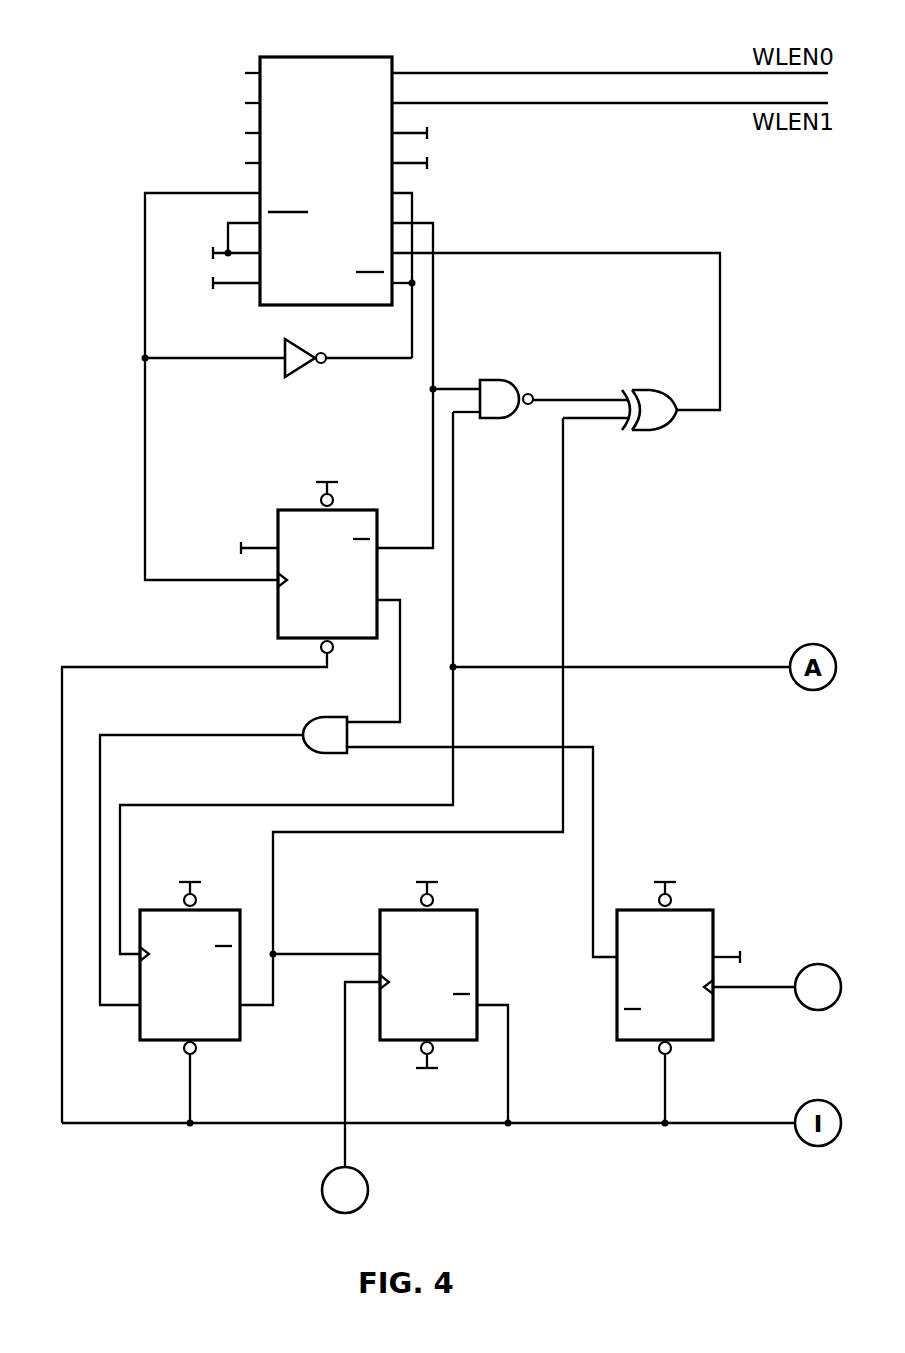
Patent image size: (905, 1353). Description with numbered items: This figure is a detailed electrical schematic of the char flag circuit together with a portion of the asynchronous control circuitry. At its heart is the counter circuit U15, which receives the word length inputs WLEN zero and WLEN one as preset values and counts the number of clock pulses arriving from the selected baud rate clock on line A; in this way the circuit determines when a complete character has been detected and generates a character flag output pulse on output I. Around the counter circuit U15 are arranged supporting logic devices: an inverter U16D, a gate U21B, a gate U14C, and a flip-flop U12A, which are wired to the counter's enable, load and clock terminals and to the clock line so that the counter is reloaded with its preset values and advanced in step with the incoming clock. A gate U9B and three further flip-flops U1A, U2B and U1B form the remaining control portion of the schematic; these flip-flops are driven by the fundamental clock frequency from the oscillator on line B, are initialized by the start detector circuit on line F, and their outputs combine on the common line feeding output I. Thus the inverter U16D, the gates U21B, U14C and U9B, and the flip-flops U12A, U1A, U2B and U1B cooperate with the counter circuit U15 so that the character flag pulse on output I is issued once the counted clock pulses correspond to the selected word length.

The counter circuit U15 is at (321, 163).
The 74LS04 inverter U16D is at (278, 372).
The 74HCT86 NAND gate (exclusive-OR package) U21B is at (530, 401).
The 74HCT00 exclusive-OR gate U14C is at (651, 410).
The 74HCT74 D-type flip-flop U12A is at (231, 790).
The 74HCT08 AND gate U9B is at (358, 844).
The 74HCT74 D-type flip-flop U1A is at (211, 992).
The 74HCT74 D-type flip-flop U2B is at (446, 1035).
The 74HCT74 D-type flip-flop U1B is at (713, 992).